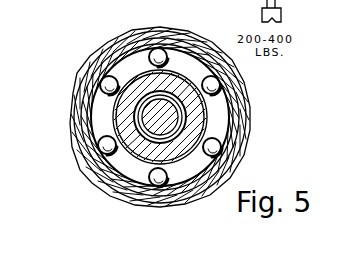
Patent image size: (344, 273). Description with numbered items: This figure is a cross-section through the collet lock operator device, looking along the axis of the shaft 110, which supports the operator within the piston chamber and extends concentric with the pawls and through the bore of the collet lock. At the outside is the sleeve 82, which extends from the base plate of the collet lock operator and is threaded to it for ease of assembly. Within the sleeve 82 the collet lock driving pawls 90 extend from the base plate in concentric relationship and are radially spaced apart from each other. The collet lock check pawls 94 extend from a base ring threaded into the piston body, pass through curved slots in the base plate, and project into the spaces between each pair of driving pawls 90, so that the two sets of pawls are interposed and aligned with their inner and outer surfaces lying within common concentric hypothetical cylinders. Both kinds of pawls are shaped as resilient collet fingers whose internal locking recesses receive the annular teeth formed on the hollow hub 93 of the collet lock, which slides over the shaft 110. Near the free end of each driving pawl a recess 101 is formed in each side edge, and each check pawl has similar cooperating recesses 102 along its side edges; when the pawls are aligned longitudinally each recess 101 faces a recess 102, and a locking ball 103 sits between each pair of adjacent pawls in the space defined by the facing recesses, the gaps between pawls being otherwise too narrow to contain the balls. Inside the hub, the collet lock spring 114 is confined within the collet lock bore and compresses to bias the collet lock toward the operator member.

The sleeve 82 is at (237, 156).
The collet lock driving pawls 90 is at (223, 60).
The hollow hub 93 is at (228, 177).
The collet lock check pawls 94 is at (122, 50).
The recess 101 is at (200, 52).
The cooperating recesses 102 is at (155, 45).
The locking ball 103 is at (171, 45).
The shaft 110 is at (168, 118).
The collet lock spring 114 is at (130, 121).